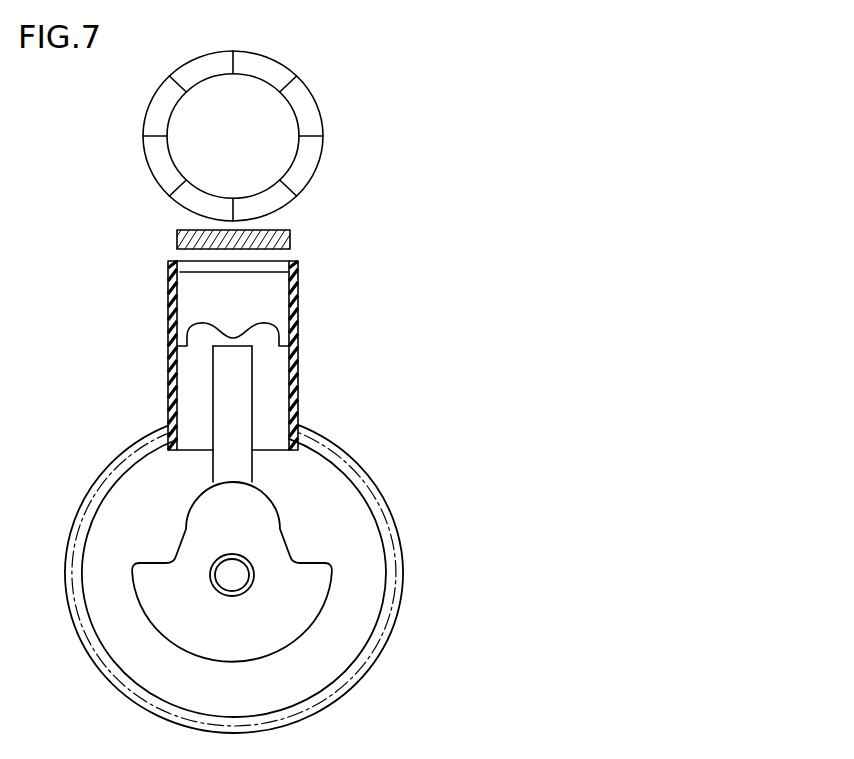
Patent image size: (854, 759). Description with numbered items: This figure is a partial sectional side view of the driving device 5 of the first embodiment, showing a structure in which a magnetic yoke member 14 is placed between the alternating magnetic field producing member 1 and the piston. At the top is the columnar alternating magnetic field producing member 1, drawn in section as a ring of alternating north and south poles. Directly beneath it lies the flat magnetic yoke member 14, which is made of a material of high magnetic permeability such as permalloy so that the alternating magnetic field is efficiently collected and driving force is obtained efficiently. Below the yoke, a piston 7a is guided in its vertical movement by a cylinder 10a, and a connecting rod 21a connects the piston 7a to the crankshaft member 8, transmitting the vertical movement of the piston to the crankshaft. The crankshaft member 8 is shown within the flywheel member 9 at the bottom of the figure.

The driving device 5 is at (471, 117).
The alternating magnetic field producing member 1 is at (172, 91).
The magnetic yoke member 14 is at (188, 242).
The piston 7a is at (265, 292).
The cylinder 10a is at (293, 382).
The connecting rod 21a is at (232, 415).
The flywheel member 9 is at (330, 513).
The crankshaft member 8 is at (253, 586).